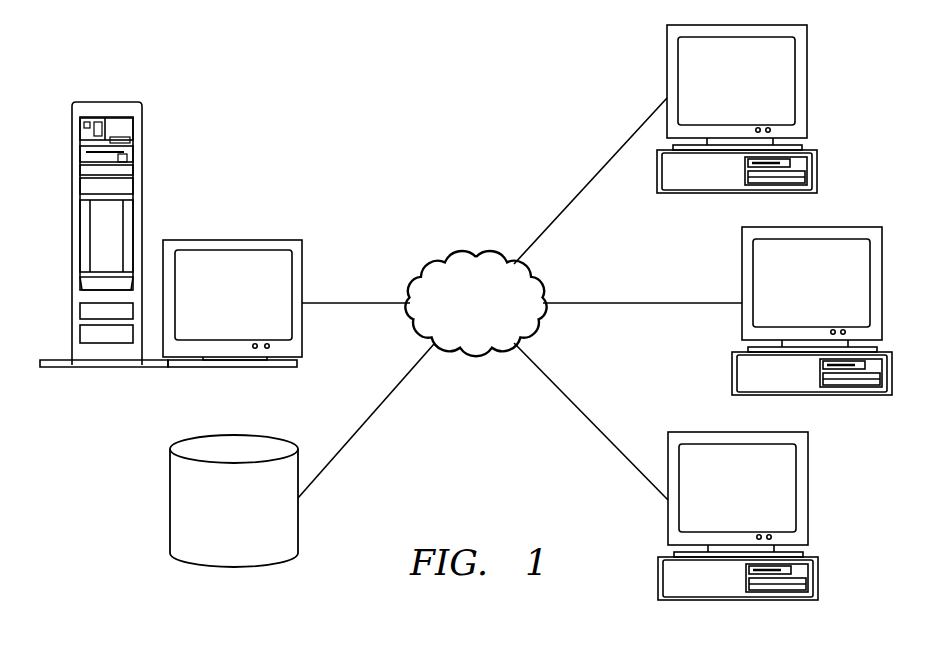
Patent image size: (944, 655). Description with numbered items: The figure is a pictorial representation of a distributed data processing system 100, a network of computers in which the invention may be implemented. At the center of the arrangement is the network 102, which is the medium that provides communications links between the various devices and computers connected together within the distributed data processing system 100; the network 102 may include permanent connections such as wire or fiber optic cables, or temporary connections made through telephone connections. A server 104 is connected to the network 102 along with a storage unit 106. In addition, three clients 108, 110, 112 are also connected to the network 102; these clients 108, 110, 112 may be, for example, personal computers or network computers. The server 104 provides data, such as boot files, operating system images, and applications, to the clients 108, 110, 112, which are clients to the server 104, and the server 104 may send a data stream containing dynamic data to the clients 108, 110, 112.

The distributed data processing system 100 is at (368, 68).
The network 102 is at (456, 333).
The server 104 is at (214, 304).
The storage unit 106 is at (214, 523).
The client 108 is at (718, 93).
The client 110 is at (812, 325).
The client 112 is at (738, 530).